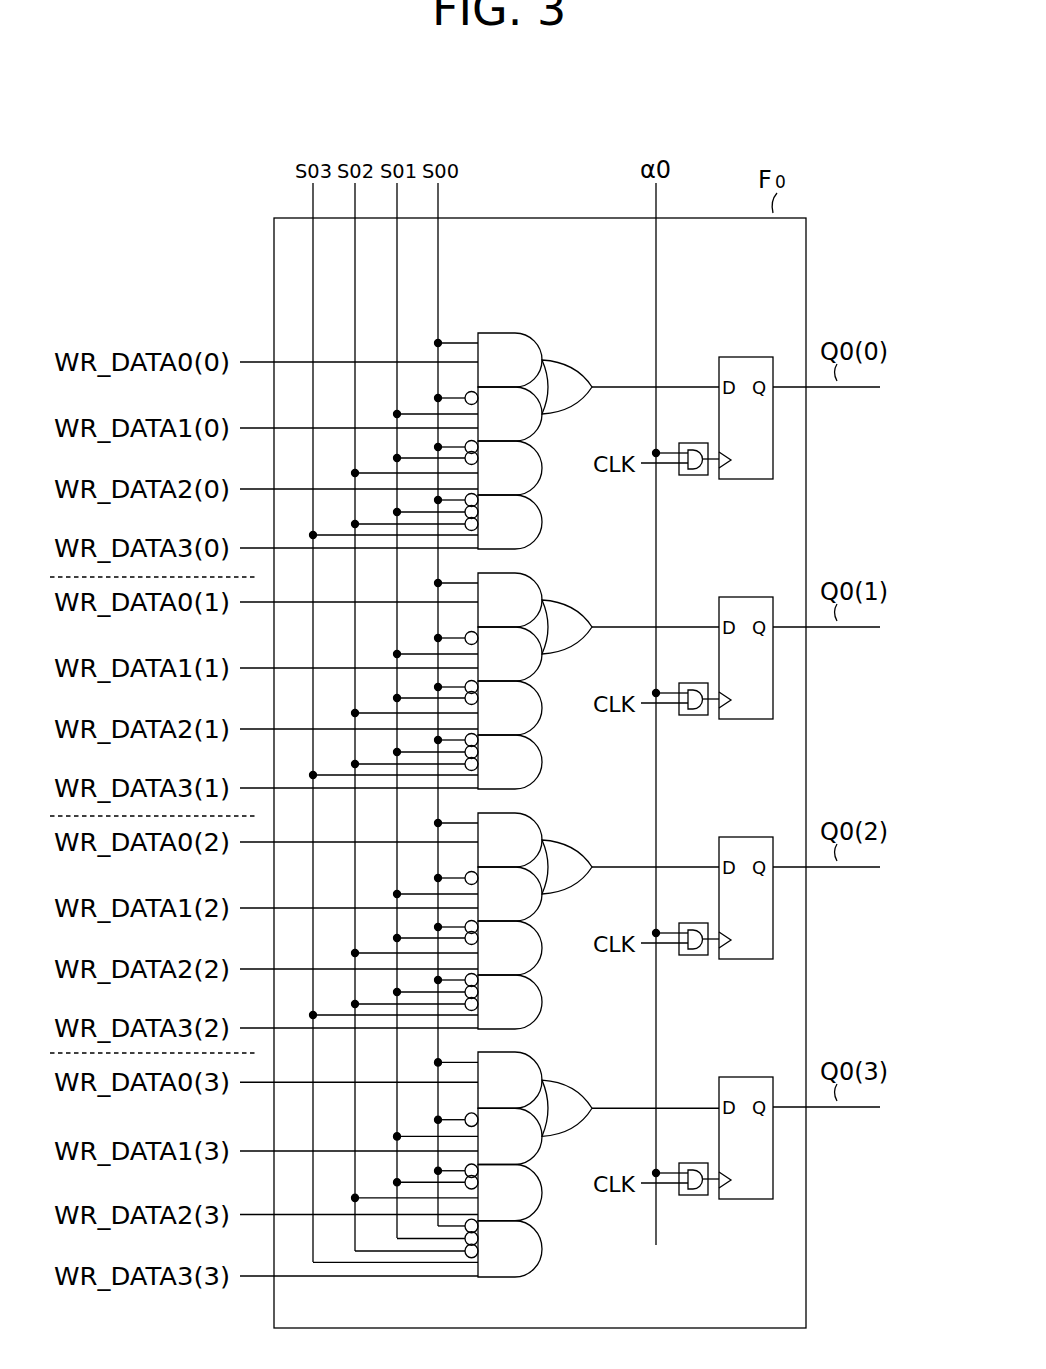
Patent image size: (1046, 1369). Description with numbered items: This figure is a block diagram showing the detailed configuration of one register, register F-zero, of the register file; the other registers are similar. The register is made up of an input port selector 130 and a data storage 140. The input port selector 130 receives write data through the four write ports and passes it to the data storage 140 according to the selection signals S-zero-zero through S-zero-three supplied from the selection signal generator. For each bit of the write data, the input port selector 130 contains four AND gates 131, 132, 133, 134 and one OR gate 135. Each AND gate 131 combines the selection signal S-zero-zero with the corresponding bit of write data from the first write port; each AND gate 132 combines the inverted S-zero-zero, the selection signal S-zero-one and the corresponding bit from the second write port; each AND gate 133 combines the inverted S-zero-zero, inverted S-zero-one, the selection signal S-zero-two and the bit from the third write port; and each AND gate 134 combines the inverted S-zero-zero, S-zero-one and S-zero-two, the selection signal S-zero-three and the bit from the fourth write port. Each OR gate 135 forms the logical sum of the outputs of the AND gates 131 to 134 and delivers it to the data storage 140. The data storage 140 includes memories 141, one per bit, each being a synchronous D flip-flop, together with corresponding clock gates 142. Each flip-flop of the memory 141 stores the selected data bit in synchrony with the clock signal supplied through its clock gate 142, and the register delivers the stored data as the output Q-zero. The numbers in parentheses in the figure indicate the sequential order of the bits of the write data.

The input port selector 130 is at (530, 267).
The data storage 140 is at (736, 269).
The AND gate 131 is at (498, 331).
The AND gate 132 is at (544, 418).
The AND gate 133 is at (543, 483).
The AND gate 134 is at (543, 528).
The OR gate 135 is at (596, 363).
The memory 141 is at (731, 355).
The clock gate 142 is at (690, 476).